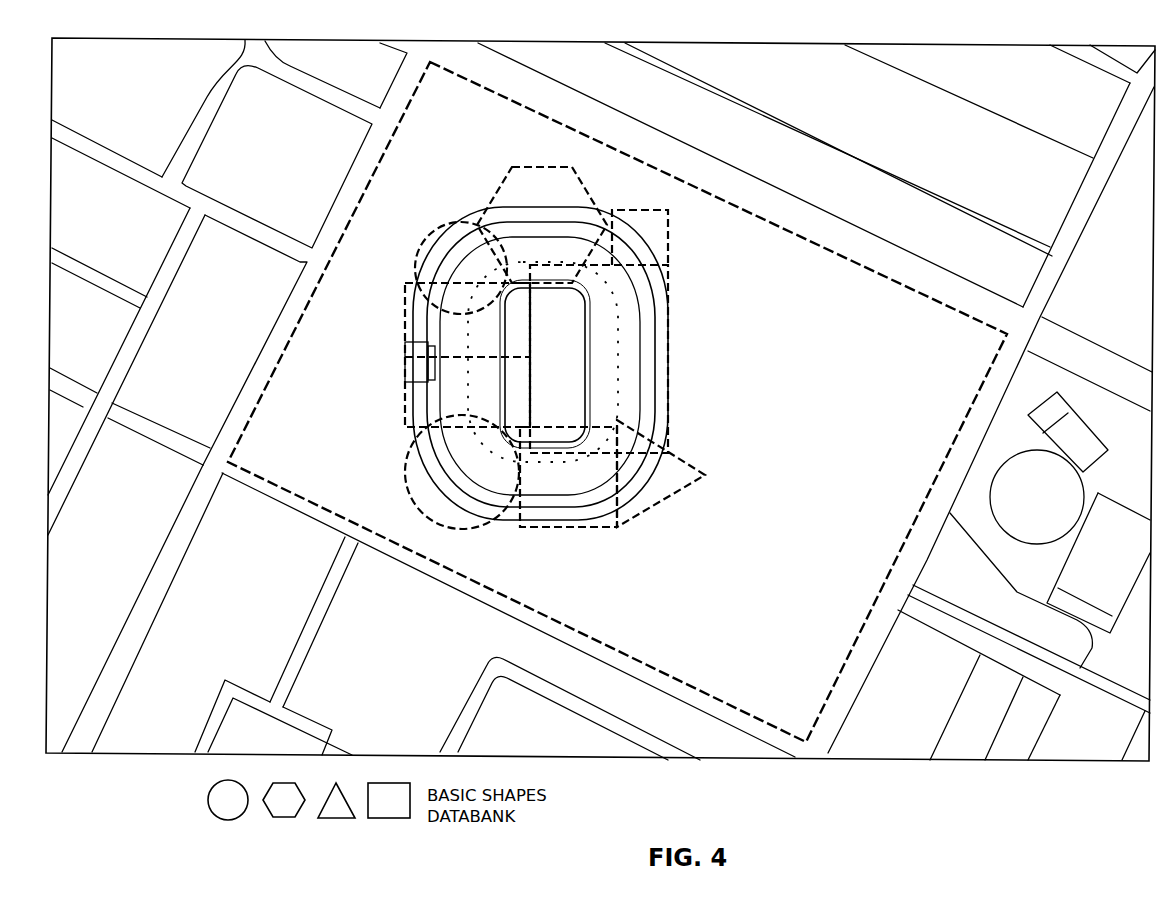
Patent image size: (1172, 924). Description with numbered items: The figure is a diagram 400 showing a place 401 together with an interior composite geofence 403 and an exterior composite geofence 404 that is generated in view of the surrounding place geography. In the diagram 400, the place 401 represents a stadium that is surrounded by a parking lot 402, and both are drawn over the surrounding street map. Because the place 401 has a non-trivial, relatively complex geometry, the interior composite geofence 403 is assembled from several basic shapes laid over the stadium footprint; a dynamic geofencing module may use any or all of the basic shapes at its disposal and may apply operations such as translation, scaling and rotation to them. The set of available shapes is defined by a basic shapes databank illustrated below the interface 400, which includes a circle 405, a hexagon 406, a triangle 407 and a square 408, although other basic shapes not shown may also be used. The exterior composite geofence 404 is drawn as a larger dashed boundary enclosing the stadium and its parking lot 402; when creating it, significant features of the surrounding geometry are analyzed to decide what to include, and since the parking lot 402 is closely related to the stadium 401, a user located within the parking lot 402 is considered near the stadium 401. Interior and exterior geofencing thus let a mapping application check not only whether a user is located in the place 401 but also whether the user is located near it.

The diagram 400 is at (808, 28).
The place 401 is at (536, 363).
The parking lot 402 is at (832, 476).
The interior composite geofence 403 is at (575, 527).
The exterior composite geofence 404 is at (372, 183).
The circle 405 is at (223, 820).
The hexagon 406 is at (277, 818).
The triangle 407 is at (333, 819).
The square 408 is at (390, 819).